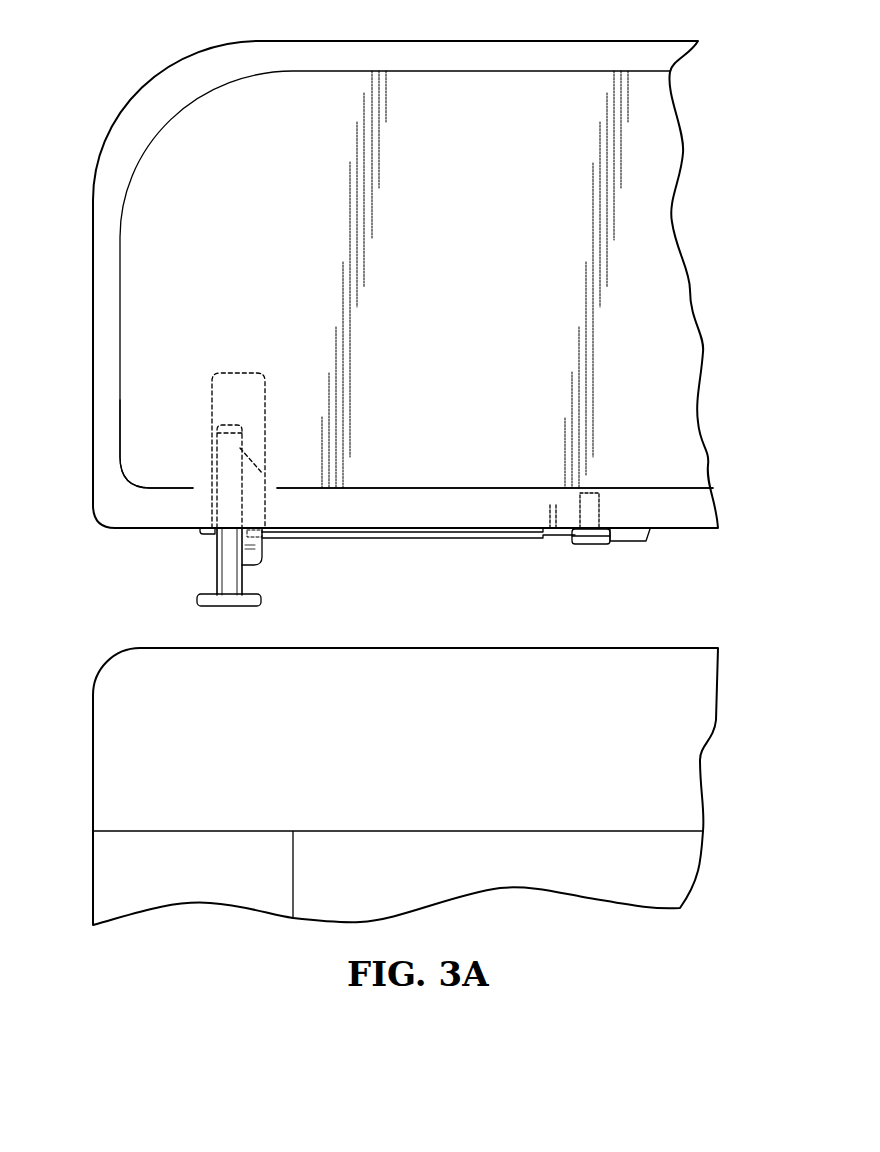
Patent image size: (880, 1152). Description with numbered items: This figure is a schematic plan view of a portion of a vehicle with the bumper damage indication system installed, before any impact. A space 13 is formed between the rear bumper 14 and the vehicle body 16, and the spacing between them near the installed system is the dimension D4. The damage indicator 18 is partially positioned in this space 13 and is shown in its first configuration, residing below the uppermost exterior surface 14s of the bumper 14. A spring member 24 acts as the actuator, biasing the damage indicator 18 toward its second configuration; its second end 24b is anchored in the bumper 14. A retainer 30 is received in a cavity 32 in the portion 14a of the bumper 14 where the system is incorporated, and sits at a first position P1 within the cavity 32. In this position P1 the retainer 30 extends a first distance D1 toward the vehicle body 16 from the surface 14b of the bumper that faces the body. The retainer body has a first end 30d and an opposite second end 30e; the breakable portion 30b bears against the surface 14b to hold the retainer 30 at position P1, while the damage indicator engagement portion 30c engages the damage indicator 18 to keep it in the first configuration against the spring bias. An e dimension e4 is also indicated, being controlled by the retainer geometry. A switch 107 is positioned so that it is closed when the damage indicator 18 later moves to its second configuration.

The space 13 is at (658, 592).
The rear bumper 14 is at (97, 167).
The portion of the bumper 14a is at (194, 383).
The surface of the bumper facing the vehicle body 14b is at (474, 530).
The uppermost exterior surface 14s is at (296, 80).
The vehicle body 16 is at (93, 758).
The damage indicator 18 is at (413, 528).
The spring member 24 is at (590, 546).
The second end of the spring member 24b is at (548, 518).
The retainer 30 is at (202, 503).
The breakable portion 30b is at (207, 536).
The damage indicator engagement portion 30c is at (255, 548).
The first end of the body portion 30d is at (226, 608).
The second end of the body portion 30e is at (236, 428).
The cavity 32 is at (241, 372).
The switch 107 is at (641, 540).
The first distance D1 is at (139, 528).
The spacing between the bumper and the vehicle body D4 is at (754, 528).
The e dimension e4 is at (289, 563).
The first position P1 is at (205, 558).